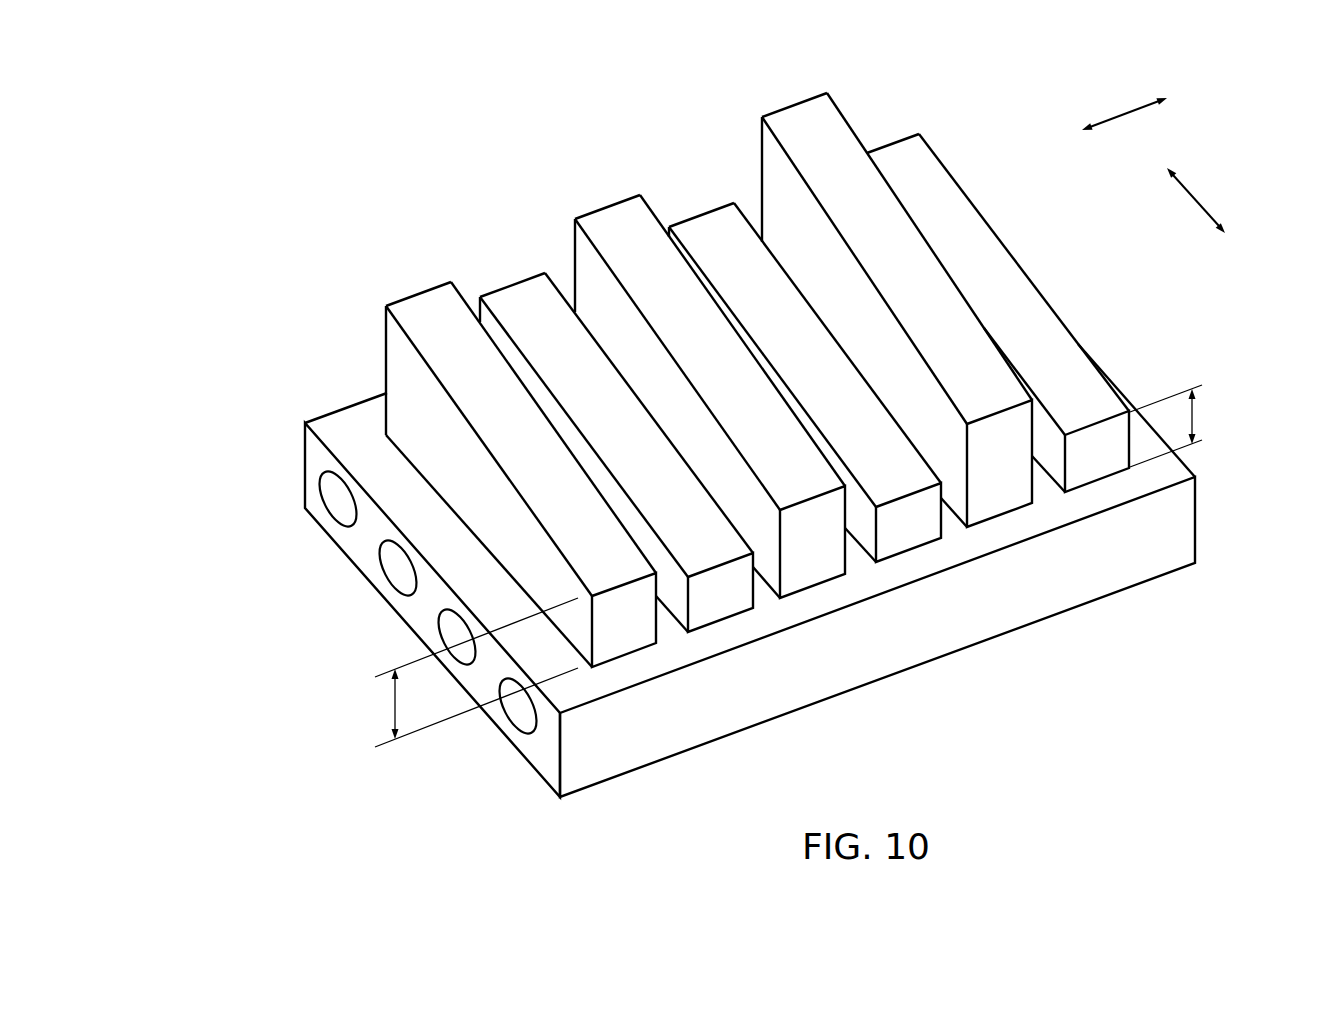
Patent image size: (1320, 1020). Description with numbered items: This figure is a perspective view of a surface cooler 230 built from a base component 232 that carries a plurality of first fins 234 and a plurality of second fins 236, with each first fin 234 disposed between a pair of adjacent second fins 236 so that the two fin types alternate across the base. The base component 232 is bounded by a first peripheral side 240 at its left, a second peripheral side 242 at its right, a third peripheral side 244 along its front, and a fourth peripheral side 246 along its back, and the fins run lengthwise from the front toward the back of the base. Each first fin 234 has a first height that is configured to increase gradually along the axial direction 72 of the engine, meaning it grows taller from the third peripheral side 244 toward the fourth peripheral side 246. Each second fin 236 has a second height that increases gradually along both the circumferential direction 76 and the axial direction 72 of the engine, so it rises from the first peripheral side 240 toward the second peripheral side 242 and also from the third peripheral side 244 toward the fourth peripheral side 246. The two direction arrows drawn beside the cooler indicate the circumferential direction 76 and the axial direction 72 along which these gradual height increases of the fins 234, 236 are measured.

The surface cooler 230 is at (238, 104).
The base component 232 is at (1211, 513).
The first fins 234 is at (710, 227).
The second fins 236 is at (613, 322).
The first peripheral side 240 is at (312, 461).
The second peripheral side 242 is at (1132, 393).
The third peripheral side 244 is at (975, 615).
The fourth peripheral side 246 is at (344, 404).
The circumferential direction 76 is at (1125, 112).
The axial direction 72 is at (1195, 195).